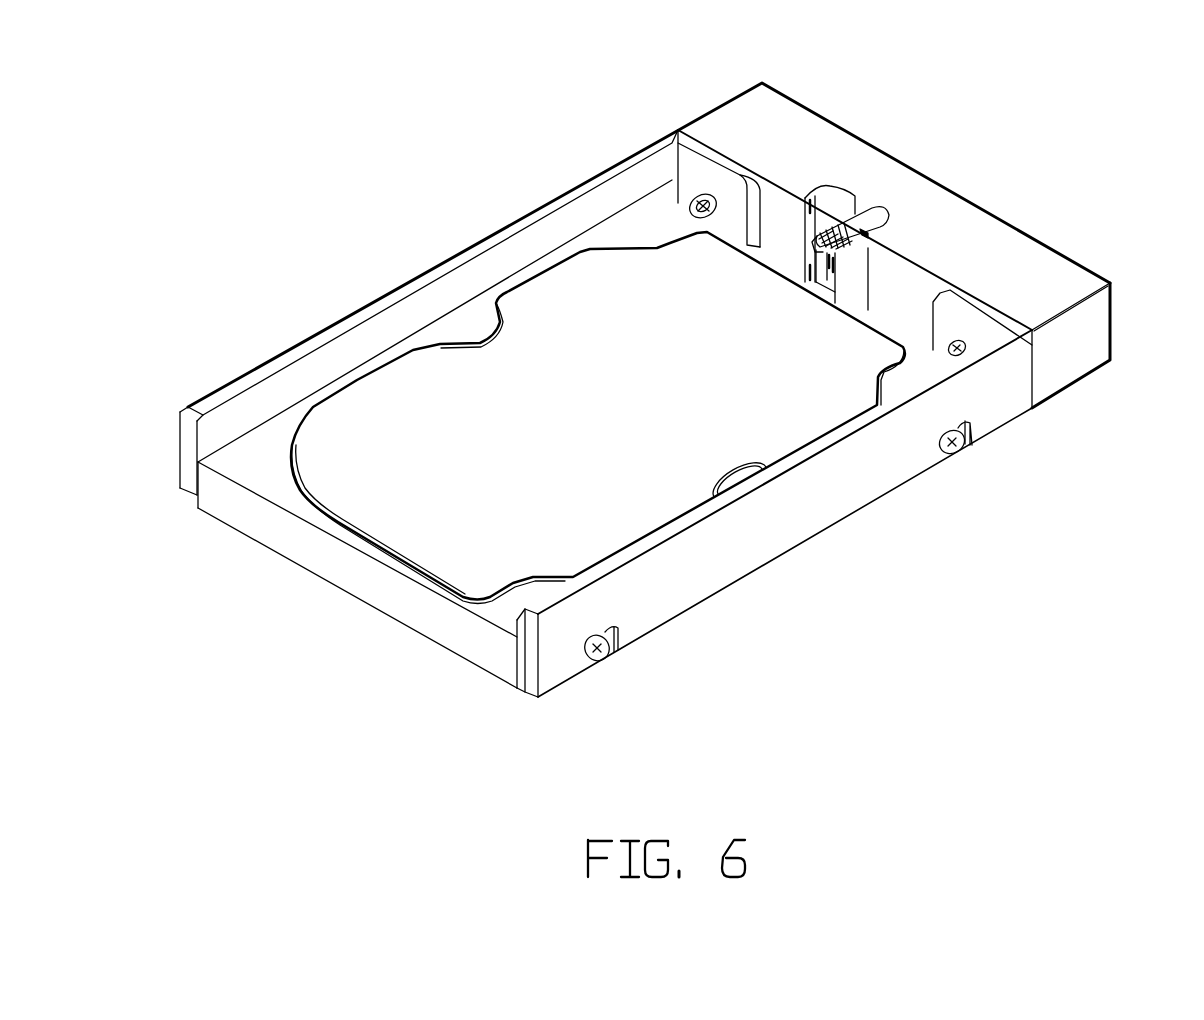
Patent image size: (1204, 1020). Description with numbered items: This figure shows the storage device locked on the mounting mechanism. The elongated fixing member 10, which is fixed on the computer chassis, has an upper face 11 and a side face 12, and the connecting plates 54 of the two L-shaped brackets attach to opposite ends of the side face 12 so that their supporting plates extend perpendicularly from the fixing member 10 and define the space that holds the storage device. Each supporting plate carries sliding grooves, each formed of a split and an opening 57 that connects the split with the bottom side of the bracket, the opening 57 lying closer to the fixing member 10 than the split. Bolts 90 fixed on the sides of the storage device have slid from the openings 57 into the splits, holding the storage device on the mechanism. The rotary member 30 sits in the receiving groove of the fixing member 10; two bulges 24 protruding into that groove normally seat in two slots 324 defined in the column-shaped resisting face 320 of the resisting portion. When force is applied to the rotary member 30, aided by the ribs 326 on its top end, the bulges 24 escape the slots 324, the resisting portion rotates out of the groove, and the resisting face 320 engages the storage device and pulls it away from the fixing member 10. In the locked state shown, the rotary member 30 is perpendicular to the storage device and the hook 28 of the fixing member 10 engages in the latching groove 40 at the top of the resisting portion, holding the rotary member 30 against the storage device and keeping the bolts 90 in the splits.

The fixing member 10 is at (1063, 360).
The upper face 11 is at (788, 110).
The side face 12 is at (910, 303).
The bulges 24 is at (810, 200).
The hook 28 is at (863, 232).
The rotary member 30 is at (877, 215).
The latching groove 40 is at (950, 362).
The connecting plate 54 is at (660, 603).
The opening 57 is at (967, 447).
The bolts 90 is at (942, 457).
The resisting face 320 is at (825, 280).
The slots 324 is at (835, 265).
The ribs 326 is at (830, 230).